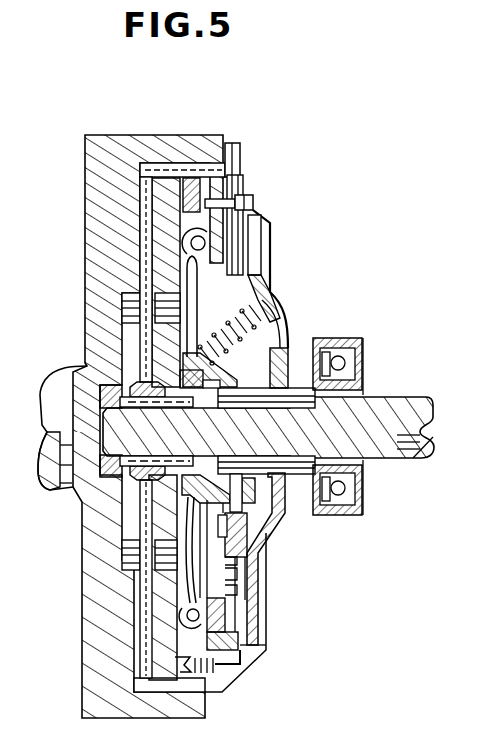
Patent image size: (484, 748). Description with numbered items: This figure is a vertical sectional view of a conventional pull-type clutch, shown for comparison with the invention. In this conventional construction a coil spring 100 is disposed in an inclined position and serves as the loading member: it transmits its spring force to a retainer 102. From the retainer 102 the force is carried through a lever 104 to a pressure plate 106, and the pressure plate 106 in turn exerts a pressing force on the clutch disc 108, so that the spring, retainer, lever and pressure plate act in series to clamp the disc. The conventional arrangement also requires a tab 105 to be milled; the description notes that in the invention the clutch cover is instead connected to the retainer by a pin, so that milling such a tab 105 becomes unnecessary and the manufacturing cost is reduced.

The coil spring 100 is at (288, 313).
The retainer 102 is at (243, 510).
The lever 104 is at (197, 334).
The tab 105 is at (245, 537).
The pressure plate 106 is at (256, 212).
The clutch disc 108 is at (152, 172).